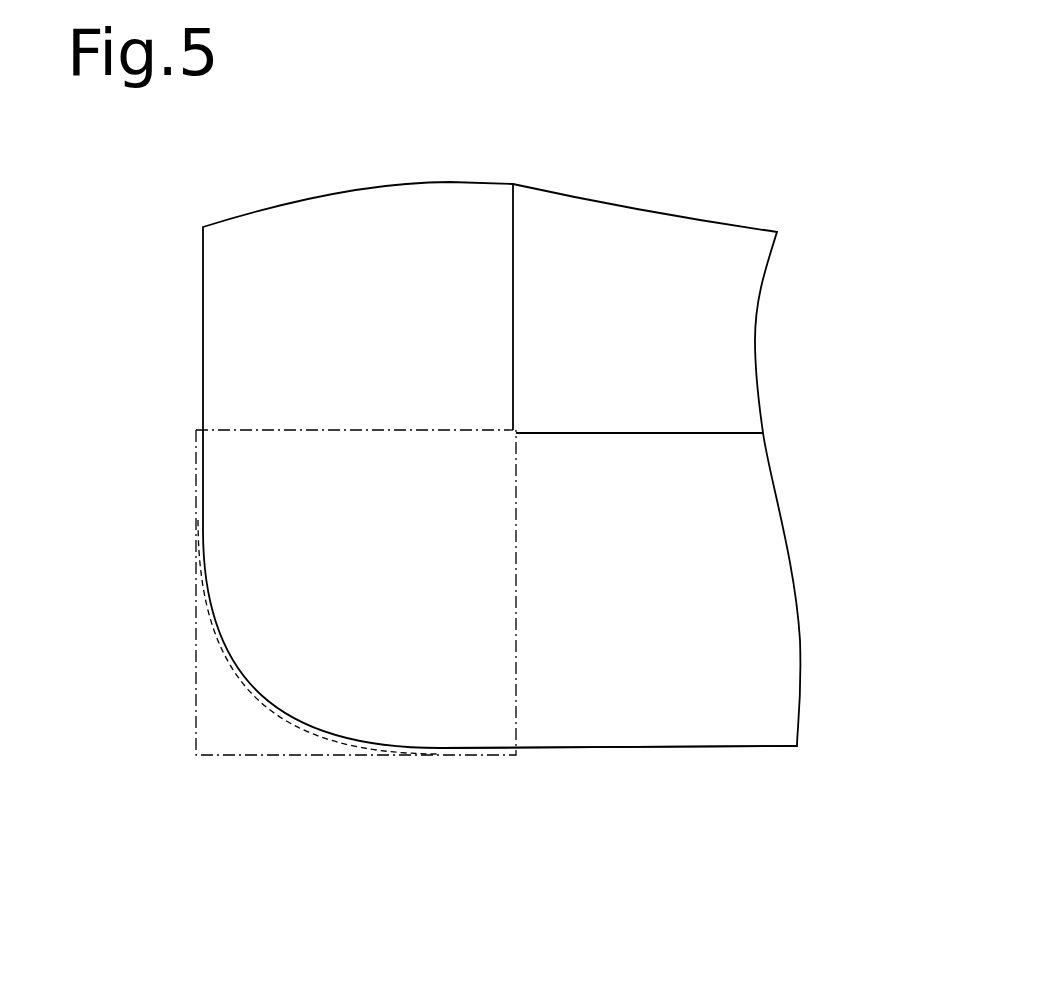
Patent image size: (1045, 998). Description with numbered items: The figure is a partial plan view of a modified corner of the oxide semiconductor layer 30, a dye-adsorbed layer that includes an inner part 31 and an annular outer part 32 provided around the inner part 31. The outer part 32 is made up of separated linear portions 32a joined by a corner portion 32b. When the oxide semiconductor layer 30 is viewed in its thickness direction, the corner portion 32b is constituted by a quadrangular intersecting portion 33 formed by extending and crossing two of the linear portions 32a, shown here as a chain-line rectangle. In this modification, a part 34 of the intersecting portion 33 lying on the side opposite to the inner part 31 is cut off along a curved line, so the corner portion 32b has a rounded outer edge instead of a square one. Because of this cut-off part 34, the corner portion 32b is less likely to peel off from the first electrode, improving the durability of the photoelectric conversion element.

The oxide semiconductor layer 30 is at (656, 200).
The inner part 31 is at (727, 342).
The outer part 32 is at (626, 893).
The linear portion 32a is at (243, 338).
The corner portion 32b is at (478, 703).
The intersecting portion 33 is at (252, 755).
The cut-off part 34 is at (227, 712).